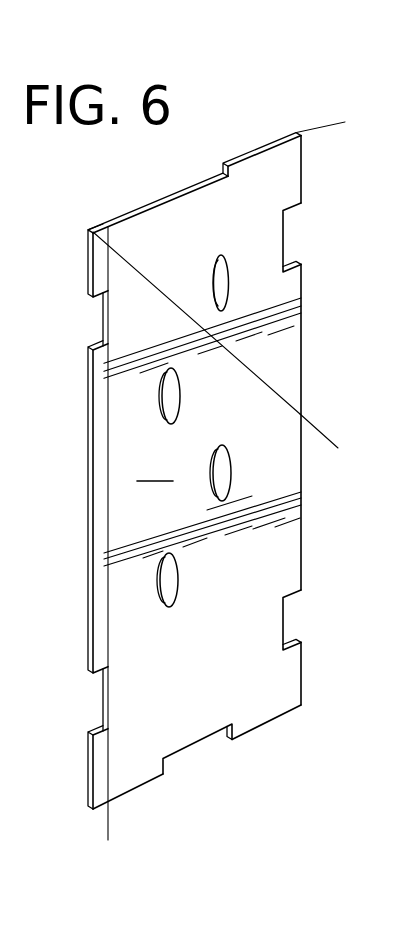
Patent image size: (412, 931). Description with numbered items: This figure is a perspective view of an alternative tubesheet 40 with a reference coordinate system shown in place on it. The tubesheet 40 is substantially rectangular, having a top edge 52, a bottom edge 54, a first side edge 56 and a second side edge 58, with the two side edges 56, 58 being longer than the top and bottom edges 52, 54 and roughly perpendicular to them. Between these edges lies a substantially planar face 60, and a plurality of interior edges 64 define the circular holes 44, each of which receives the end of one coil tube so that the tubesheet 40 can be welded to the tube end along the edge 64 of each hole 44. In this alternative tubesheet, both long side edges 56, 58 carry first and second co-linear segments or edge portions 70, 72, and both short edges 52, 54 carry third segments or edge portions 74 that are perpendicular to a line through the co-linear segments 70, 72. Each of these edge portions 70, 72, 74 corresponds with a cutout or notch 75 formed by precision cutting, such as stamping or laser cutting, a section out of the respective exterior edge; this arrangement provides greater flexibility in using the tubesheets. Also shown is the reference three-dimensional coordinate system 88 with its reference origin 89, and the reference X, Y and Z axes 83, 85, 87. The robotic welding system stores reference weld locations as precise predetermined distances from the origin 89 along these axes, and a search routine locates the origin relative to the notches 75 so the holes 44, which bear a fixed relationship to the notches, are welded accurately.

The tubesheet 40 is at (282, 676).
The circular hole 44 is at (214, 284).
The top edge 52 is at (237, 167).
The bottom edge 54 is at (273, 719).
The first side edge 56 is at (90, 538).
The second side edge 58 is at (302, 494).
The planar face 60 is at (155, 470).
The interior edge 64 is at (226, 283).
The first co-linear segment or edge portion 70 is at (108, 321).
The second co-linear segment or edge portion 72 is at (106, 692).
The third segment or edge portion 74 is at (183, 195).
The cutout or notch 75 is at (302, 207).
The reference X axis 83 is at (111, 832).
The reference Y axis 85 is at (314, 139).
The reference Z axis 87 is at (301, 394).
The reference three-dimensional coordinate system 88 is at (337, 445).
The reference origin 89 is at (107, 241).